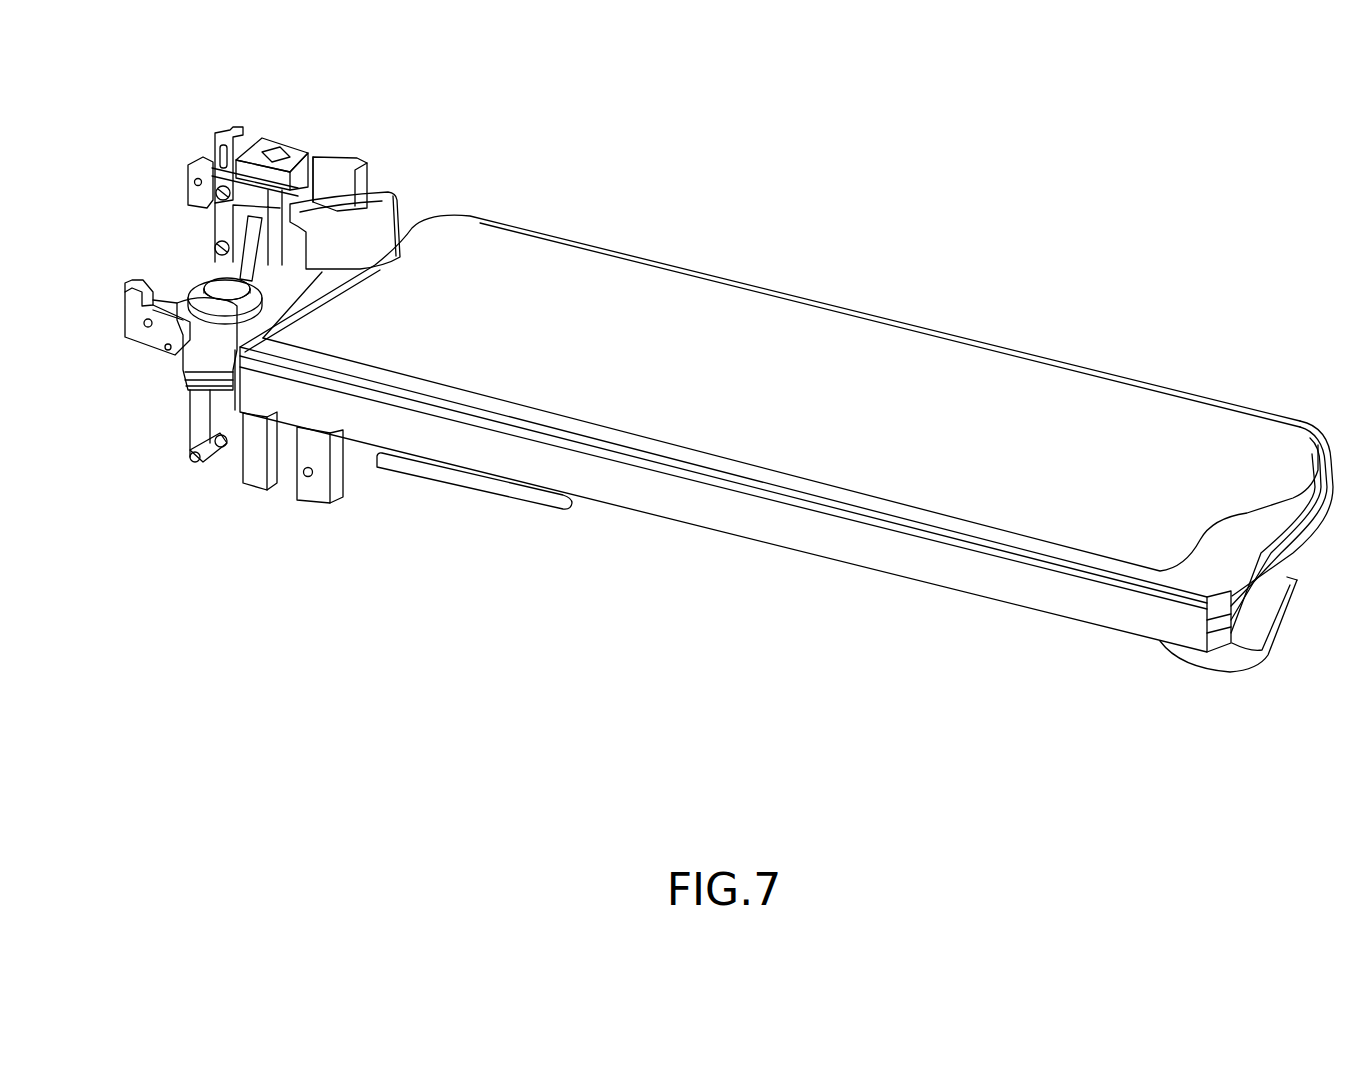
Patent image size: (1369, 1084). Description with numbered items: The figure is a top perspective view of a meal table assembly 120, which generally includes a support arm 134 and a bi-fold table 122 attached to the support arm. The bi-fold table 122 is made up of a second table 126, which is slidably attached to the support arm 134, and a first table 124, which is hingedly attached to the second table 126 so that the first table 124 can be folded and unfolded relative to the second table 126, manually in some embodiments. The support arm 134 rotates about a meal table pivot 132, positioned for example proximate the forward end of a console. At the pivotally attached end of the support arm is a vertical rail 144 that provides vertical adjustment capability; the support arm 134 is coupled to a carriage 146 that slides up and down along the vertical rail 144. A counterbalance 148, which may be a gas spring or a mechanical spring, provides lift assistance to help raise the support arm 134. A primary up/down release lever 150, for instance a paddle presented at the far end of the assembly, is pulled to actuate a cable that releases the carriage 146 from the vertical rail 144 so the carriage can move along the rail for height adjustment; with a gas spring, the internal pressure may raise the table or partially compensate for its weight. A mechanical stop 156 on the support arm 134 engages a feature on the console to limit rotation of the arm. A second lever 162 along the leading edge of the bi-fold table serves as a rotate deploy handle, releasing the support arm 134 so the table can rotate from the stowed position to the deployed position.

The meal table assembly 120 is at (657, 206).
The bi-fold table 122 is at (947, 330).
The first table 124 is at (1238, 425).
The second table 126 is at (1312, 538).
The meal table pivot 132 is at (213, 277).
The support arm 134 is at (187, 353).
The vertical rail 144 is at (260, 477).
The carriage 146 is at (243, 133).
The counterbalance 148 is at (200, 410).
The primary up/down release lever 150 is at (1242, 657).
The mechanical stop 156 is at (130, 309).
The second lever 162 is at (460, 478).